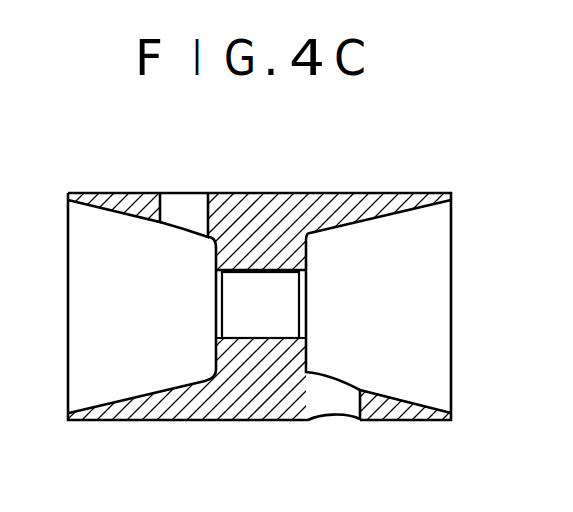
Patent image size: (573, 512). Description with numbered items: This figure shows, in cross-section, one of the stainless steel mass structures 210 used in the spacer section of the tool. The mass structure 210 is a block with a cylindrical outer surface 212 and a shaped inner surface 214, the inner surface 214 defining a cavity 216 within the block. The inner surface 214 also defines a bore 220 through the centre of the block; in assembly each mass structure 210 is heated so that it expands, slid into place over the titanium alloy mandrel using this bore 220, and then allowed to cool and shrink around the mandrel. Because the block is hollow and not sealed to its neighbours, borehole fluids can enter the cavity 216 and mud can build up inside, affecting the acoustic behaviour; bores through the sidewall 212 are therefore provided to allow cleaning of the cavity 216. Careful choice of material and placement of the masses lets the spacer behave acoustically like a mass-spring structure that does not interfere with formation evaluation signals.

The mass structure 210 is at (365, 202).
The cylindrical outer surface 212 is at (275, 194).
The shaped inner surface 214 is at (398, 213).
The cavity 216 is at (286, 306).
The bore 220 is at (272, 272).